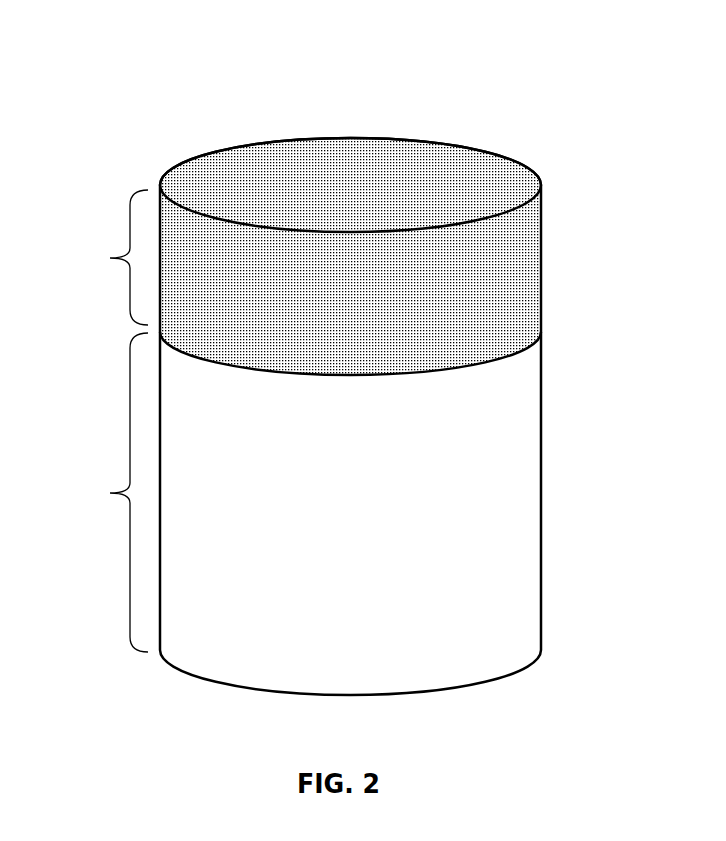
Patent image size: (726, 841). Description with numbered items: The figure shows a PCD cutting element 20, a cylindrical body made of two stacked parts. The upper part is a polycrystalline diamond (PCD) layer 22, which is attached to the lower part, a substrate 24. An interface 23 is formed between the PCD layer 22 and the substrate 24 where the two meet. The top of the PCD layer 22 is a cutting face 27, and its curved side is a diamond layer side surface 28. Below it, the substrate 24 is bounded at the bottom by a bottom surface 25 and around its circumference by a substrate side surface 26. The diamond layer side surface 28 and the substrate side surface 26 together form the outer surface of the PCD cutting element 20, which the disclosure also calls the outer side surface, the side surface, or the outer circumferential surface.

The PCD cutting element 20 is at (389, 423).
The polycrystalline diamond (PCD) layer 22 is at (383, 258).
The interface 23 is at (508, 357).
The substrate 24 is at (363, 555).
The bottom surface 25 is at (478, 685).
The substrate side surface 26 is at (109, 492).
The cutting face 27 is at (262, 168).
The diamond layer side surface 28 is at (109, 257).